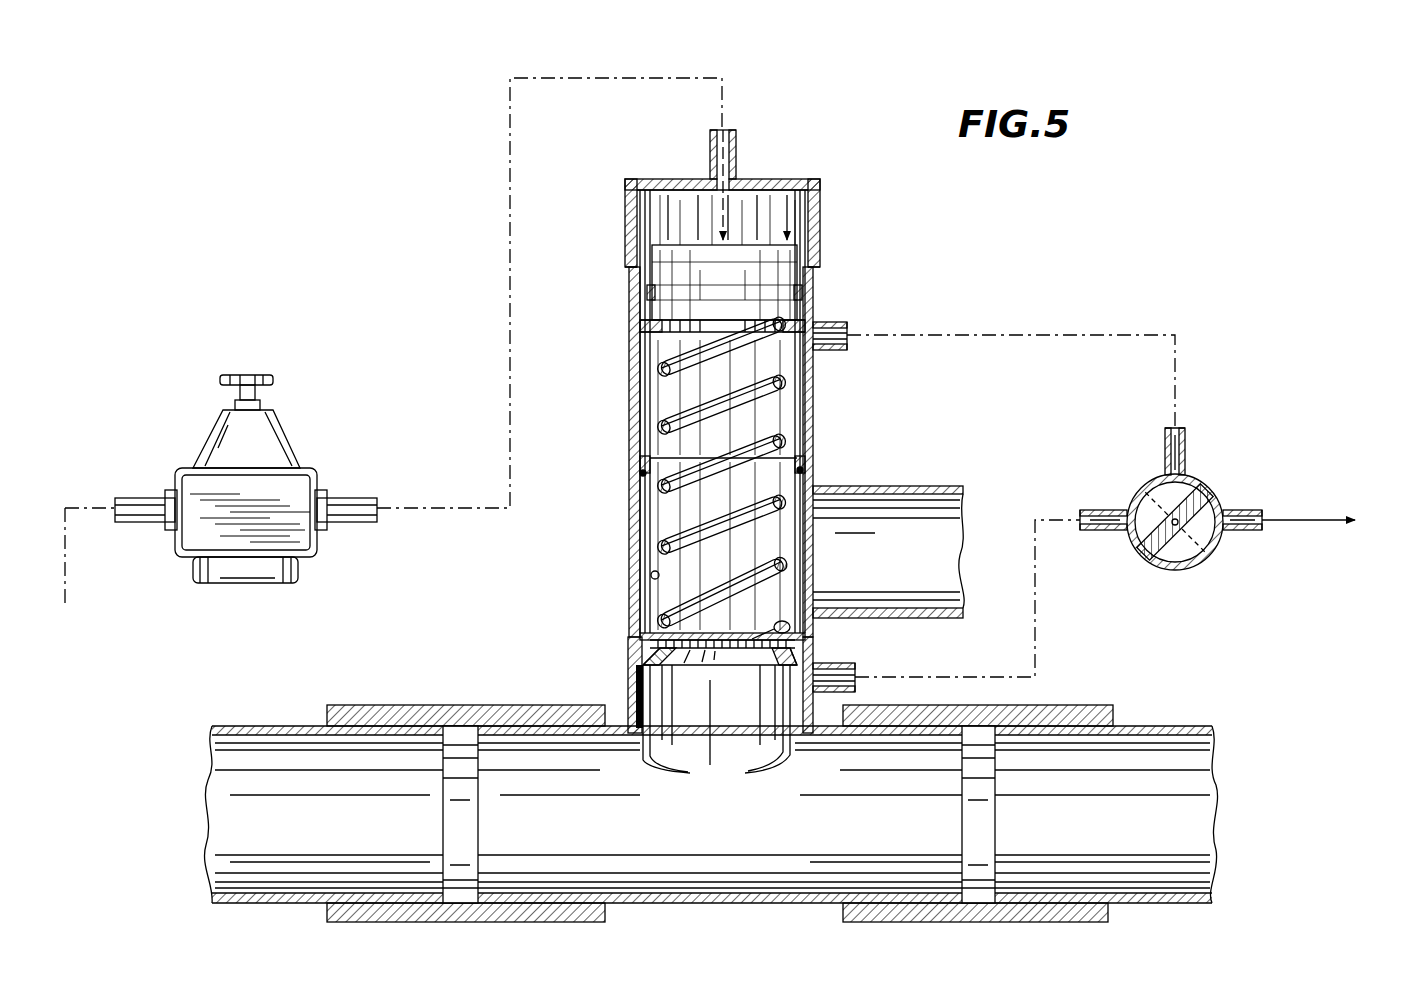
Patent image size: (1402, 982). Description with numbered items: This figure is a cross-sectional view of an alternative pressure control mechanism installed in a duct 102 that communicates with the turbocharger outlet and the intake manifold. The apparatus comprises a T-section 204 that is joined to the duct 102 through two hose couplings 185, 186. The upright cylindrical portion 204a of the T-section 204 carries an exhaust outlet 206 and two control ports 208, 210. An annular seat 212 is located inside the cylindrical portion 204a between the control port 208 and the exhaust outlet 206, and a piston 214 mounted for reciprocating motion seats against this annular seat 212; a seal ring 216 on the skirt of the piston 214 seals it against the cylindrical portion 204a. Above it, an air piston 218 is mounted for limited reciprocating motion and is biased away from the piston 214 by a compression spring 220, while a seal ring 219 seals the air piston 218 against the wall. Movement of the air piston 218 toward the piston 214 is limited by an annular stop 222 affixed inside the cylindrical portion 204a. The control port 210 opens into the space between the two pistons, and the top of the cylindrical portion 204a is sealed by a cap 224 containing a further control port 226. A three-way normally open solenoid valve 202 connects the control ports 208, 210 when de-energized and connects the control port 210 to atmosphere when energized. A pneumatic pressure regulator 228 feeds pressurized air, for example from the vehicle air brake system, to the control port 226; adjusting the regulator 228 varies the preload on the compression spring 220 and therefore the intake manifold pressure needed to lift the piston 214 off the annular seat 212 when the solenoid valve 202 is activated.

The duct 102 is at (256, 714).
The hose coupling 185 is at (351, 705).
The hose coupling 186 is at (1090, 714).
The three-way normally open solenoid valve 202 is at (1232, 468).
The T-section 204 is at (612, 712).
The cylindrical portion 204a is at (633, 435).
The exhaust outlet 206 is at (945, 487).
The control port 208 is at (843, 668).
The control port 210 is at (830, 352).
The annular seat 212 is at (650, 624).
The piston 214 is at (651, 575).
The seal ring 216 is at (806, 470).
The air piston 218 is at (808, 303).
The seal ring 219 is at (820, 270).
The compression spring 220 is at (782, 438).
The annular stop 222 is at (635, 322).
The cap 224 is at (822, 214).
The control port 226 is at (738, 152).
The pneumatic pressure regulator 228 is at (283, 426).